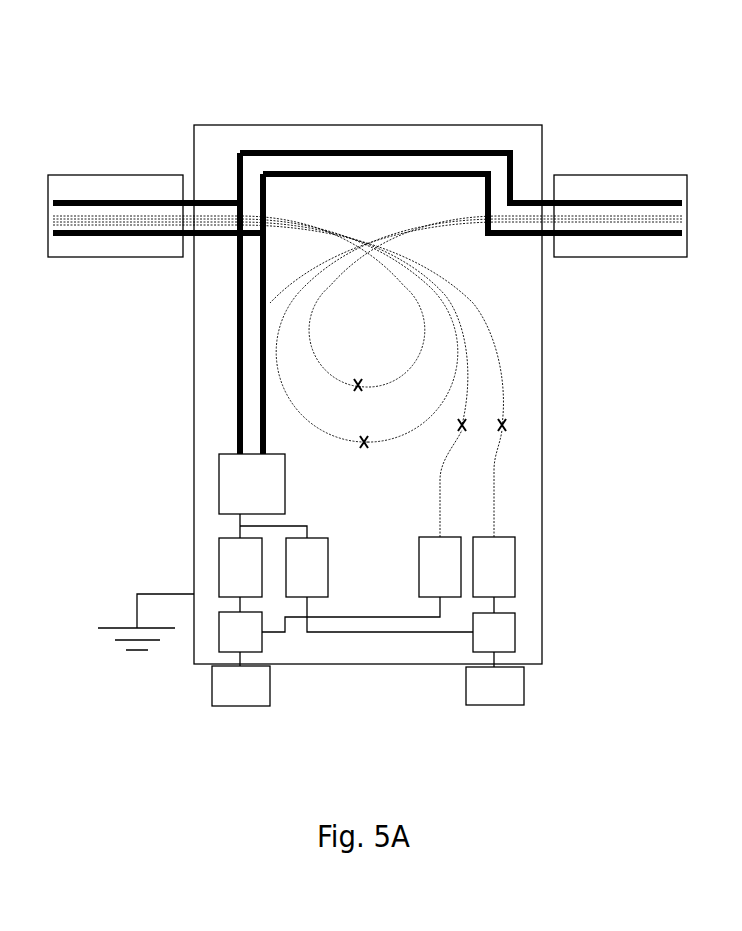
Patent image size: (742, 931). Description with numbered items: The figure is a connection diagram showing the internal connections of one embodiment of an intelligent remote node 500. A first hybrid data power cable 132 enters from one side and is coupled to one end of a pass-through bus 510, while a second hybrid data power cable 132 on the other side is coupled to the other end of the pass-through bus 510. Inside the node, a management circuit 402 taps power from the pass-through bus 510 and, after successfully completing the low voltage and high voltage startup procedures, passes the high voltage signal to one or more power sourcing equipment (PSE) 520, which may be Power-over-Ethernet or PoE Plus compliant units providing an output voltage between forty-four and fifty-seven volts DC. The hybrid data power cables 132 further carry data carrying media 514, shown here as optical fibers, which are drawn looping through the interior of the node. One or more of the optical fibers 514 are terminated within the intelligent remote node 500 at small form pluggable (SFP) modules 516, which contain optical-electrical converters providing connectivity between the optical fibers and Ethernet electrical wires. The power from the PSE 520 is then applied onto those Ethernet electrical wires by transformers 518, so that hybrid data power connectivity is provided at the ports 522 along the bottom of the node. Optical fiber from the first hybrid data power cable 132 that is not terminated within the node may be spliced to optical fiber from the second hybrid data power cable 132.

The hybrid data power cable 132 is at (93, 173).
The intelligent remote node 500 is at (370, 122).
The pass-through bus 510 is at (267, 132).
The data carrying media 514 is at (344, 192).
The management circuit 402 is at (219, 478).
The power sourcing equipment 520 is at (219, 577).
The small form pluggable module 516 is at (419, 568).
The transformer 518 is at (209, 638).
The port 522 is at (452, 682).